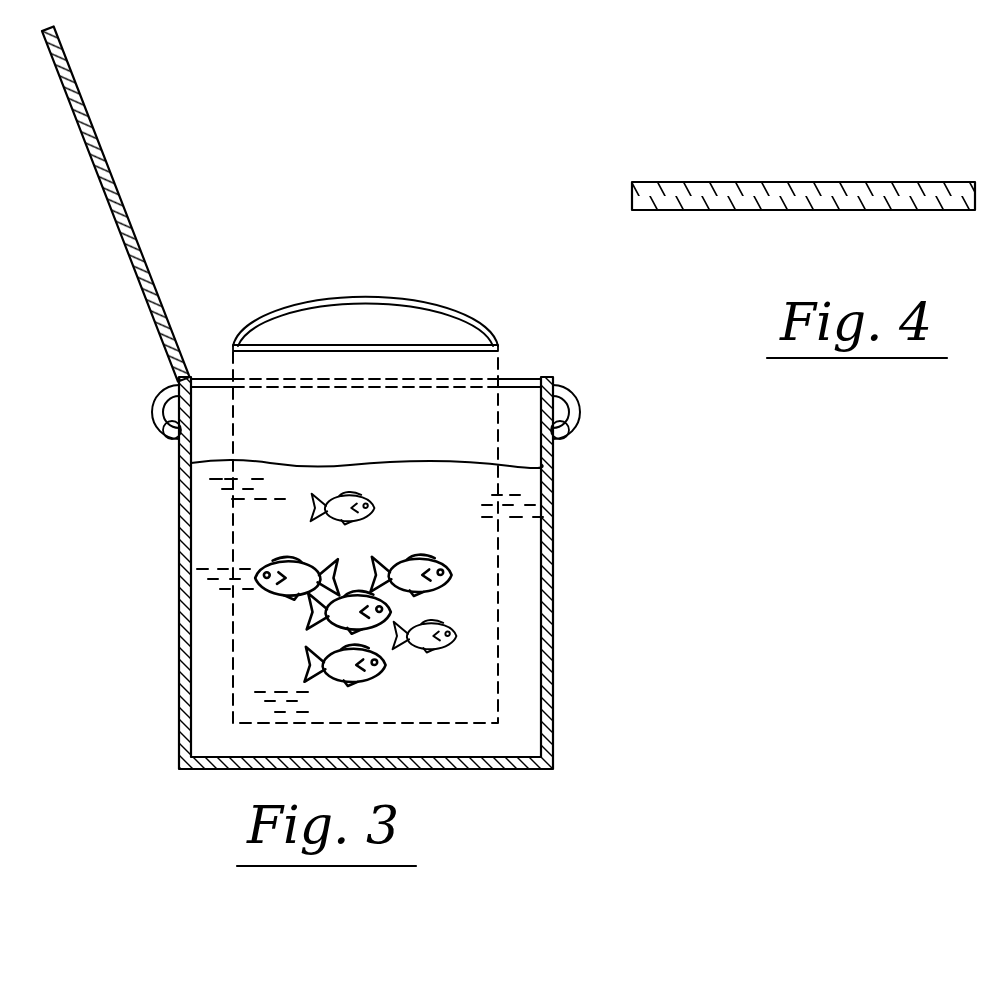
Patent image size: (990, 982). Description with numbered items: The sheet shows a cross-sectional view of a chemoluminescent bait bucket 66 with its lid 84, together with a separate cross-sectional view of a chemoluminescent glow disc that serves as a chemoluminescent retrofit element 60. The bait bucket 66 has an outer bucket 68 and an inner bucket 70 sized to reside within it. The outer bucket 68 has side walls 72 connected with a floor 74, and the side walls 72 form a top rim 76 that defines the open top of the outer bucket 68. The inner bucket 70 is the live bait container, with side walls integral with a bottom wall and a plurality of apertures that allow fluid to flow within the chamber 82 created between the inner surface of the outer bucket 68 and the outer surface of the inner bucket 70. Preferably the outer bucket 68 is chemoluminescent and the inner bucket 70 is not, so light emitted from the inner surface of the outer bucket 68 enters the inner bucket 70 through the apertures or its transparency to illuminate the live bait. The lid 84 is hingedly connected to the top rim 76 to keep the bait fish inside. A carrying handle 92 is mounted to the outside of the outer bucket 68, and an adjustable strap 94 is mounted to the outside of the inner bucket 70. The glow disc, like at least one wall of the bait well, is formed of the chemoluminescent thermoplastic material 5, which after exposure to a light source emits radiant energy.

In FIG. 3, the chemoluminescent thermoplastic material 5 is at (553, 465).
In FIG. 4, the chemoluminescent thermoplastic material 5 is at (792, 182).
In FIG. 4, the chemoluminescent retrofit element 60 is at (636, 171).
In FIG. 3, the chemoluminescent bait bucket 66 is at (582, 392).
In FIG. 3, the outer bucket 68 is at (553, 566).
In FIG. 3, the inner bucket 70 is at (498, 366).
In FIG. 3, the side walls 72 is at (178, 568).
In FIG. 3, the floor 74 is at (462, 770).
In FIG. 3, the top rim 76 is at (543, 378).
In FIG. 3, the chamber 82 is at (212, 460).
In FIG. 3, the lid 84 is at (88, 115).
In FIG. 3, the carrying handle 92 is at (160, 398).
In FIG. 3, the adjustable strap 94 is at (362, 296).